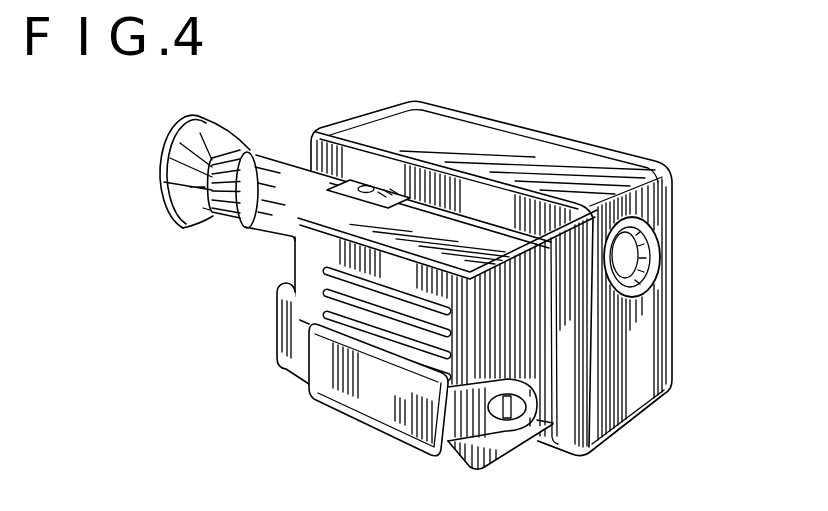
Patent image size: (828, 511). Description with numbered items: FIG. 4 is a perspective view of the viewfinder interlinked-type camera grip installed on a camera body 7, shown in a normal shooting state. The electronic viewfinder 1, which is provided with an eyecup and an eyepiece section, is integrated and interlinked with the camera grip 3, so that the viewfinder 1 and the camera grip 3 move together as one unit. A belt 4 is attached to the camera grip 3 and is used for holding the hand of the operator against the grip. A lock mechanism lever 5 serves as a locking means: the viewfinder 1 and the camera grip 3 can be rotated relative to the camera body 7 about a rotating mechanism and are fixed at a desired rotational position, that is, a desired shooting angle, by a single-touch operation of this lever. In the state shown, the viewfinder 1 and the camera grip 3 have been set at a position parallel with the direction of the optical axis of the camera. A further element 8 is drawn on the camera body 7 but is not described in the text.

The electronic viewfinder 1 is at (287, 180).
The camera grip 3 is at (383, 300).
The belt 4 is at (377, 413).
The lock mechanism lever 5 is at (380, 184).
The camera body 7 is at (490, 142).
The dial knob 8 is at (668, 262).